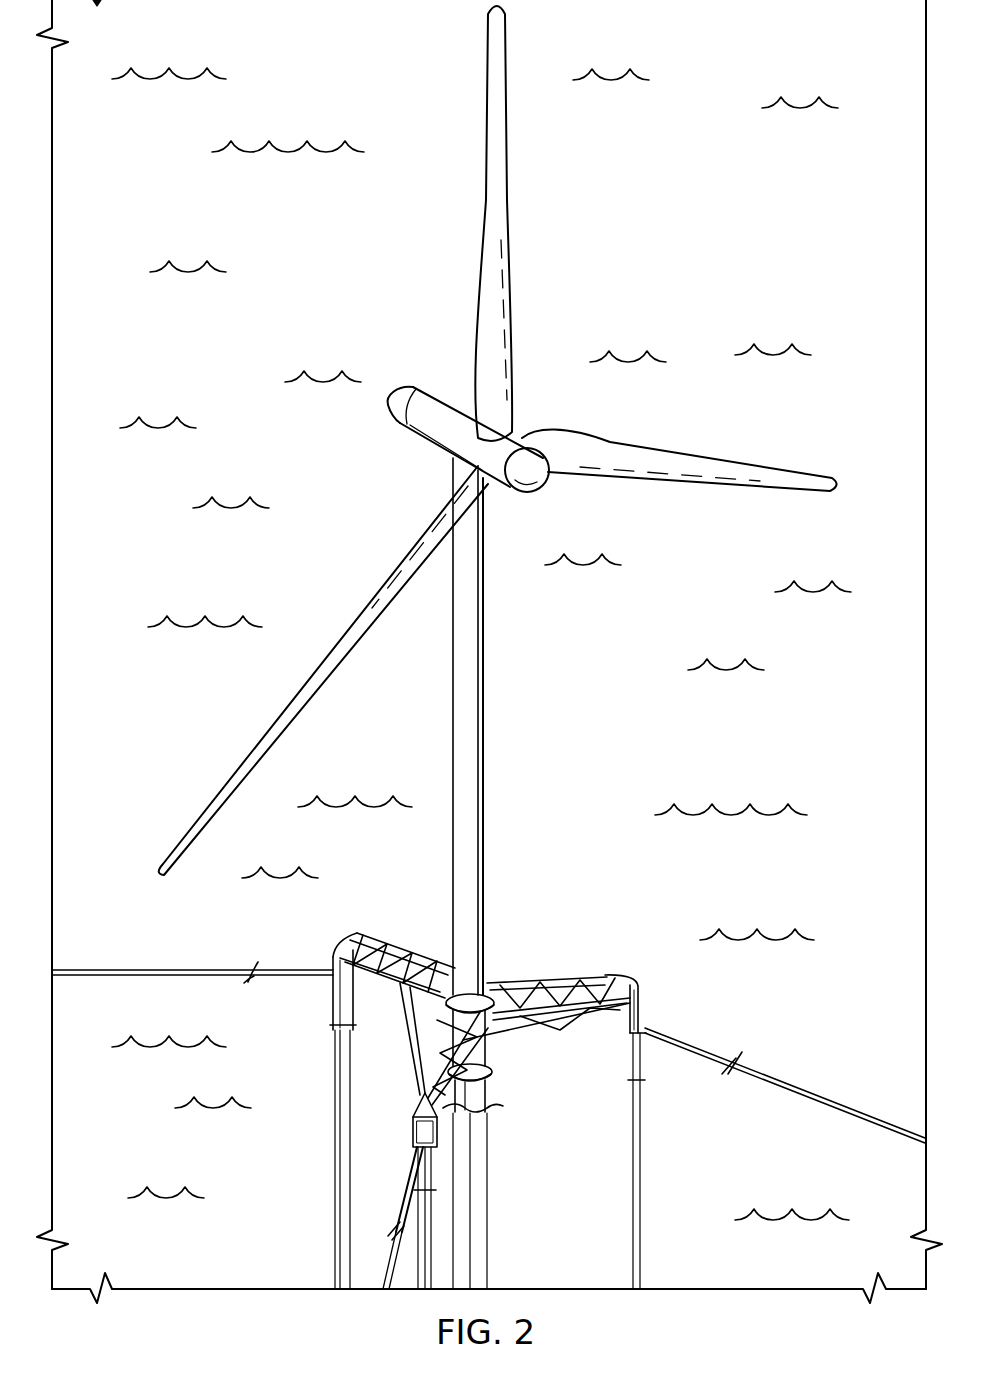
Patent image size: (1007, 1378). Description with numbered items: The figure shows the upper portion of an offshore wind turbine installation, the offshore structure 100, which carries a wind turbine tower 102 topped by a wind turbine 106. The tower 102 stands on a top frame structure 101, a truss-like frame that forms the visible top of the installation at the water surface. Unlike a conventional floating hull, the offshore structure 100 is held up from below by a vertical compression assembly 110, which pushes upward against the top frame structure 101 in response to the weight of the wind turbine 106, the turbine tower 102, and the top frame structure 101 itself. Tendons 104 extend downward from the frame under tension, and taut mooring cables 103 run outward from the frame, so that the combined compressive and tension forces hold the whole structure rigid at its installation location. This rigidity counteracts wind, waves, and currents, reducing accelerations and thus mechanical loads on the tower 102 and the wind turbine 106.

The offshore structure 100 is at (692, 228).
The top frame structure 101 is at (570, 978).
The wind turbine tower 102 is at (486, 755).
The taut mooring cables 103 is at (790, 1082).
The tendons 104 is at (640, 1136).
The wind turbine 106 is at (431, 447).
The vertical compression assembly 110 is at (487, 1167).